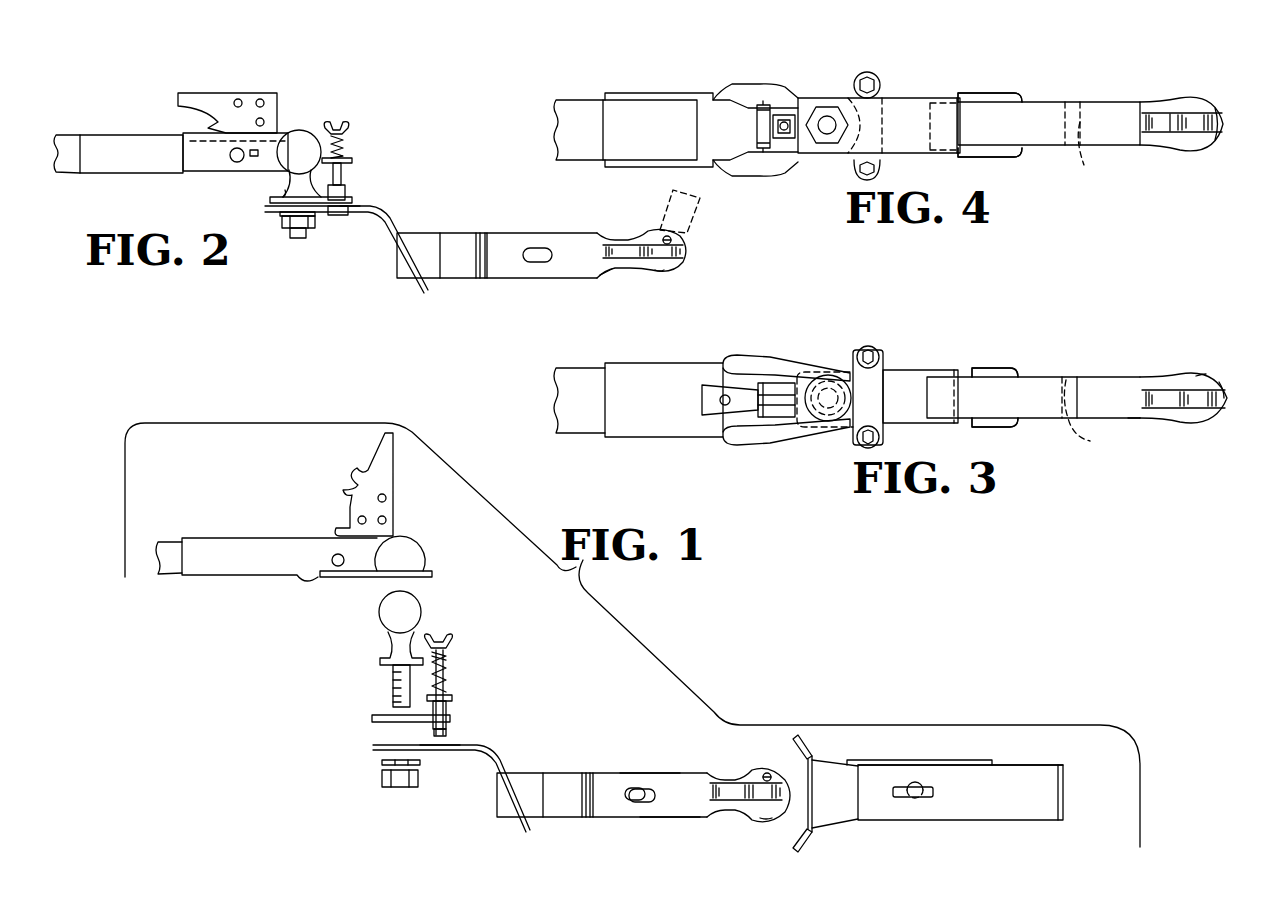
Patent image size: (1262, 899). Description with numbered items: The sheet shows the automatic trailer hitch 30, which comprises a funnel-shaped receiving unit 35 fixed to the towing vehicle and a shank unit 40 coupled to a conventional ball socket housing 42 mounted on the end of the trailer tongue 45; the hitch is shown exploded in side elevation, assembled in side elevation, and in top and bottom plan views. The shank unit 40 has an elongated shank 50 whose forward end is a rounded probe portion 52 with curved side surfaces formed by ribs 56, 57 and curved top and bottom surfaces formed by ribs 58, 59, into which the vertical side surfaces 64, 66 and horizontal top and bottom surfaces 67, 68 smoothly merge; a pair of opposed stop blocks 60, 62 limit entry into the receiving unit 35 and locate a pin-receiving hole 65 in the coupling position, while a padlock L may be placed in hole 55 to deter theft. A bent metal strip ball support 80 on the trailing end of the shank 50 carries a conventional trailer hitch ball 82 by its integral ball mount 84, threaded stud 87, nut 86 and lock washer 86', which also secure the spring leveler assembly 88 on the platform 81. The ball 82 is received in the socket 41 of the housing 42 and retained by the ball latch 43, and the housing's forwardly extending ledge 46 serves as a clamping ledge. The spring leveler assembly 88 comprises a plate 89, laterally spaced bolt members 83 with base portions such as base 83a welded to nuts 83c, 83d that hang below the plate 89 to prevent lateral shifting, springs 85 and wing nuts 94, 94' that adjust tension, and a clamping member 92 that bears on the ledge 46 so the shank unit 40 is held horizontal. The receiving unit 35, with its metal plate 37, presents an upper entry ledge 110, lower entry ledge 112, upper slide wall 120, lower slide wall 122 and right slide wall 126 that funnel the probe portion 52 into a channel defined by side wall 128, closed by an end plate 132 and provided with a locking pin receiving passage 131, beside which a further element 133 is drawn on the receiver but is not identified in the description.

In FIG. 1, the automatic trailer hitch 30 is at (250, 742).
In FIG. 1, the receiving unit 35 is at (953, 758).
In FIG. 1, the metal plate 37 is at (940, 760).
In FIG. 2, the shank unit 40 is at (448, 290).
In FIG. 4, the shank unit 40 is at (1026, 176).
In FIG. 3, the shank unit 40 is at (974, 358).
In FIG. 1, the shank unit 40 is at (529, 724).
In FIG. 2, the socket 41 is at (306, 131).
In FIG. 3, the socket 41 is at (831, 390).
In FIG. 1, the socket 41 is at (418, 546).
In FIG. 2, the ball socket housing 42 is at (150, 134).
In FIG. 4, the ball socket housing 42 is at (640, 162).
In FIG. 3, the ball socket housing 42 is at (658, 365).
In FIG. 1, the ball socket housing 42 is at (278, 537).
In FIG. 2, the ball latch 43 is at (272, 103).
In FIG. 3, the ball latch 43 is at (776, 395).
In FIG. 1, the ball latch 43 is at (395, 471).
In FIG. 2, the trailer tongue 45 is at (74, 174).
In FIG. 4, the trailer tongue 45 is at (568, 150).
In FIG. 3, the trailer tongue 45 is at (560, 390).
In FIG. 1, the trailer tongue 45 is at (172, 573).
In FIG. 2, the ledge 46 is at (300, 184).
In FIG. 3, the ledge 46 is at (851, 421).
In FIG. 1, the ledge 46 is at (435, 572).
In FIG. 4, the shank 50 is at (1113, 108).
In FIG. 3, the shank 50 is at (1044, 377).
In FIG. 1, the shank 50 is at (663, 819).
In FIG. 2, the probe portion 52 is at (692, 250).
In FIG. 4, the probe portion 52 is at (1229, 122).
In FIG. 3, the probe portion 52 is at (1229, 401).
In FIG. 1, the probe portion 52 is at (790, 796).
In FIG. 2, the hole 55 is at (663, 241).
In FIG. 1, the hole 55 is at (769, 774).
In FIG. 2, the rib 56 is at (688, 258).
In FIG. 4, the rib 56 is at (1196, 101).
In FIG. 3, the rib 56 is at (1195, 423).
In FIG. 1, the rib 56 is at (737, 790).
In FIG. 4, the rib 57 is at (1206, 149).
In FIG. 3, the rib 57 is at (1200, 374).
In FIG. 2, the rib 58 is at (662, 236).
In FIG. 3, the rib 58 is at (1223, 396).
In FIG. 1, the rib 58 is at (763, 775).
In FIG. 2, the rib 59 is at (660, 272).
In FIG. 4, the rib 59 is at (1178, 126).
In FIG. 1, the rib 59 is at (766, 813).
In FIG. 2, the stop block 60 is at (462, 248).
In FIG. 4, the stop block 60 is at (1012, 94).
In FIG. 3, the stop block 60 is at (1010, 426).
In FIG. 1, the stop block 60 is at (560, 809).
In FIG. 4, the stop block 62 is at (1020, 151).
In FIG. 3, the stop block 62 is at (995, 373).
In FIG. 2, the side surface 64 is at (601, 276).
In FIG. 3, the side surface 64 is at (1132, 420).
In FIG. 2, the pin-receiving hole 65 is at (536, 263).
In FIG. 4, the pin-receiving hole 65 is at (1086, 161).
In FIG. 3, the pin-receiving hole 65 is at (1091, 415).
In FIG. 1, the pin-receiving hole 65 is at (640, 806).
In FIG. 3, the side surface 66 is at (1105, 377).
In FIG. 2, the top surface 67 is at (541, 233).
In FIG. 1, the top surface 67 is at (647, 772).
In FIG. 2, the bottom surface 68 is at (574, 278).
In FIG. 1, the bottom surface 68 is at (678, 818).
In FIG. 2, the ball support 80 is at (388, 214).
In FIG. 4, the ball support 80 is at (893, 132).
In FIG. 1, the ball support 80 is at (495, 753).
In FIG. 2, the platform 81 is at (350, 211).
In FIG. 1, the platform 81 is at (447, 751).
In FIG. 1, the trailer hitch ball 82 is at (410, 604).
In FIG. 1, the bolt member 83 is at (448, 669).
In FIG. 2, the bolt base portion 83a is at (346, 190).
In FIG. 1, the bolt base portion 83a is at (446, 719).
In FIG. 2, the nut 83c is at (346, 216).
In FIG. 4, the nut 83c is at (882, 89).
In FIG. 1, the nut 83c is at (434, 733).
In FIG. 4, the nut 83d is at (882, 169).
In FIG. 2, the ball mount 84 is at (292, 196).
In FIG. 1, the ball mount 84 is at (390, 649).
In FIG. 1, the spring 85 is at (450, 687).
In FIG. 2, the nut 86 is at (317, 238).
In FIG. 4, the nut 86 is at (808, 150).
In FIG. 1, the nut 86 is at (371, 787).
In FIG. 2, the lock washer 86' is at (278, 233).
In FIG. 1, the lock washer 86' is at (363, 761).
In FIG. 2, the threaded stud 87 is at (300, 240).
In FIG. 4, the threaded stud 87 is at (835, 126).
In FIG. 1, the threaded stud 87 is at (393, 673).
In FIG. 2, the spring leveler assembly 88 is at (362, 150).
In FIG. 3, the spring leveler assembly 88 is at (889, 389).
In FIG. 1, the spring leveler assembly 88 is at (461, 684).
In FIG. 1, the plate 89 is at (372, 719).
In FIG. 2, the clamping member 92 is at (354, 162).
In FIG. 3, the clamping member 92 is at (878, 406).
In FIG. 1, the clamping member 92 is at (452, 699).
In FIG. 2, the wing nut 94 is at (360, 120).
In FIG. 3, the wing nut 94 is at (890, 440).
In FIG. 1, the wing nut 94 is at (451, 628).
In FIG. 3, the wing nut 94' is at (889, 346).
In FIG. 1, the upper entry ledge 110 is at (806, 749).
In FIG. 1, the lower entry ledge 112 is at (806, 843).
In FIG. 1, the upper slide wall 120 is at (835, 764).
In FIG. 1, the lower slide wall 122 is at (846, 823).
In FIG. 1, the right slide wall 126 is at (840, 784).
In FIG. 1, the side wall 128 is at (1005, 806).
In FIG. 1, the locking pin receiving passage 131 is at (915, 799).
In FIG. 1, the end plate 132 is at (1065, 793).
In FIG. 1, the pin handle 133 is at (930, 790).
In FIG. 2, the padlock L is at (700, 207).